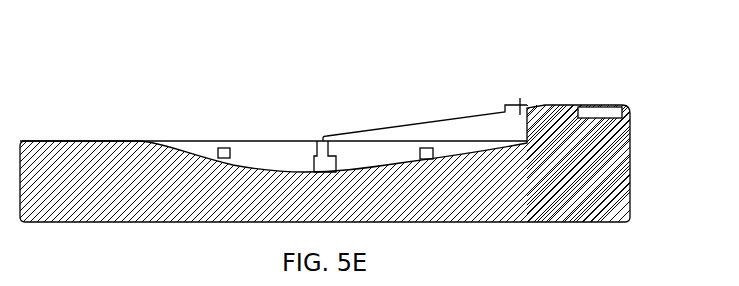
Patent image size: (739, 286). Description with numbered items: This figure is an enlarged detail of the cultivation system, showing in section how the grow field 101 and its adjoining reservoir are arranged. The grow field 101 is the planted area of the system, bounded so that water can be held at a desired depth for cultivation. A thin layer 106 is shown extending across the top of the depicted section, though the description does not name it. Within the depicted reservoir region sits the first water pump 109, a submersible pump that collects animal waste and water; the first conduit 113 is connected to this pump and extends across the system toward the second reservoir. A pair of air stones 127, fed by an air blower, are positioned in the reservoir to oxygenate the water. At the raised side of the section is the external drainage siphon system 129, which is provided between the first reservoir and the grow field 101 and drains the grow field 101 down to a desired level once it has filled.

The grow field 101 is at (633, 137).
The thin film layer 106 is at (204, 140).
The first water pump 109 is at (320, 141).
The first conduit 113 is at (343, 135).
The air stones 127 is at (428, 152).
The external drainage siphon system 129 is at (607, 118).